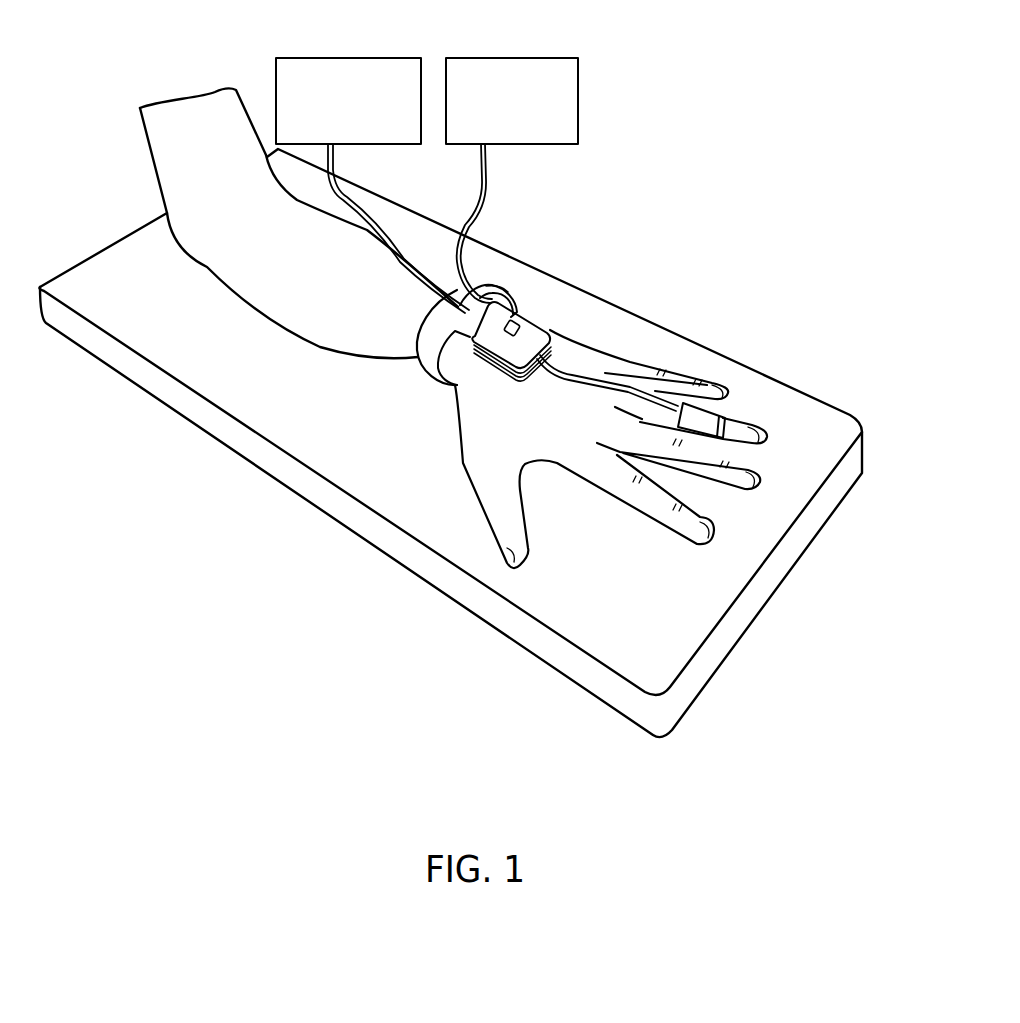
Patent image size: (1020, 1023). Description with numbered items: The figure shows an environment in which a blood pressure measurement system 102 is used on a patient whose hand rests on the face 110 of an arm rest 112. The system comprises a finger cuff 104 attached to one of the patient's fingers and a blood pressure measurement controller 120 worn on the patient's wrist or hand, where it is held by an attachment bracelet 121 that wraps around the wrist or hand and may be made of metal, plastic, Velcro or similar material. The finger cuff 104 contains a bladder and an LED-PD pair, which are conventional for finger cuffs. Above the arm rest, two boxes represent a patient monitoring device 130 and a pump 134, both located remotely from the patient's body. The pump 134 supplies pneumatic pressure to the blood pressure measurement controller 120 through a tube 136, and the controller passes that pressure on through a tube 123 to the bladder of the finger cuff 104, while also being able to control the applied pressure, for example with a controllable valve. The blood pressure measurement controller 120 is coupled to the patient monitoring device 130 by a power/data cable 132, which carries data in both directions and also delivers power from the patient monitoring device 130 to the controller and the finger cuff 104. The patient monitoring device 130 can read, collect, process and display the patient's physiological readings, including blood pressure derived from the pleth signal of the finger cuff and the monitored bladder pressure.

The blood pressure measurement system 102 is at (476, 366).
The finger cuff 104 is at (733, 396).
The face 110 is at (818, 417).
The arm rest 112 is at (510, 653).
The blood pressure measurement controller 120 is at (514, 311).
The attachment bracelet 121 is at (493, 282).
The tube 123 is at (590, 372).
The patient monitoring device 130 is at (392, 58).
The power/data cable 132 is at (405, 268).
The pump 134 is at (552, 58).
The tube 136 is at (485, 187).